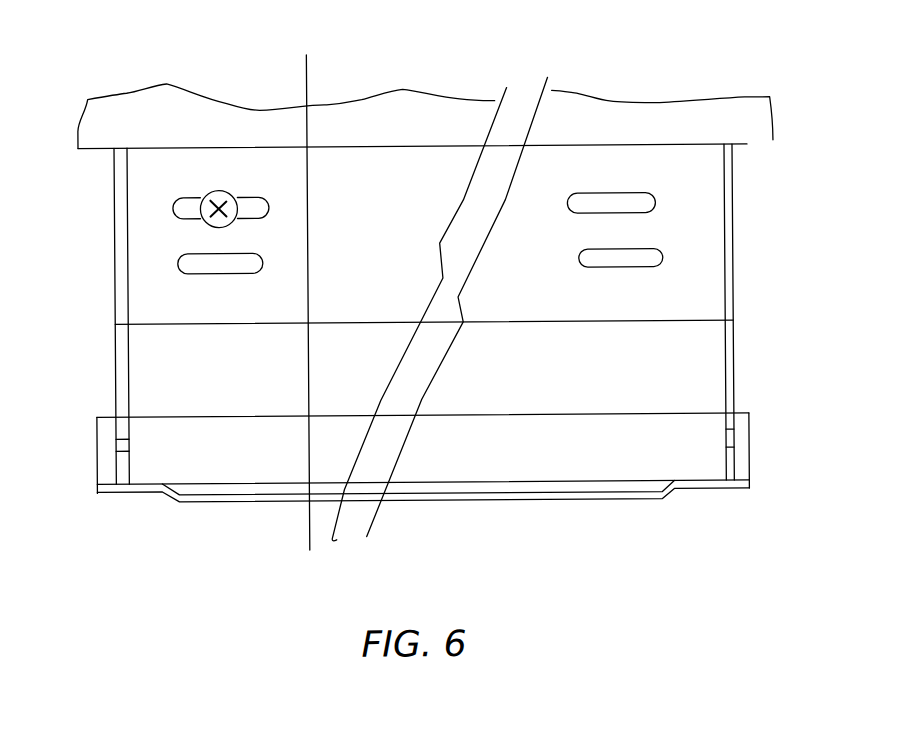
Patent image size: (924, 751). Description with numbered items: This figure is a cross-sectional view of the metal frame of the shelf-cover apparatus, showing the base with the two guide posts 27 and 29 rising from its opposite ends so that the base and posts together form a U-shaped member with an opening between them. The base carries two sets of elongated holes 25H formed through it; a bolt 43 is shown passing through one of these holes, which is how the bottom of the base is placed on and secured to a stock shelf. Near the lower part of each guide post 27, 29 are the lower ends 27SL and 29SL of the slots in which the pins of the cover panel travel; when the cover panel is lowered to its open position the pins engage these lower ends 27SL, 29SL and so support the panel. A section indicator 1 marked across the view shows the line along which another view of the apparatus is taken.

The section line 1- 1 is at (307, 55).
The elongated holes 25H is at (634, 253).
The guide post 27 is at (729, 293).
The lower end of slot 27SL is at (721, 445).
The guide post 29 is at (114, 289).
The lower end of slot 29SL is at (121, 439).
The bolt 43 is at (223, 189).